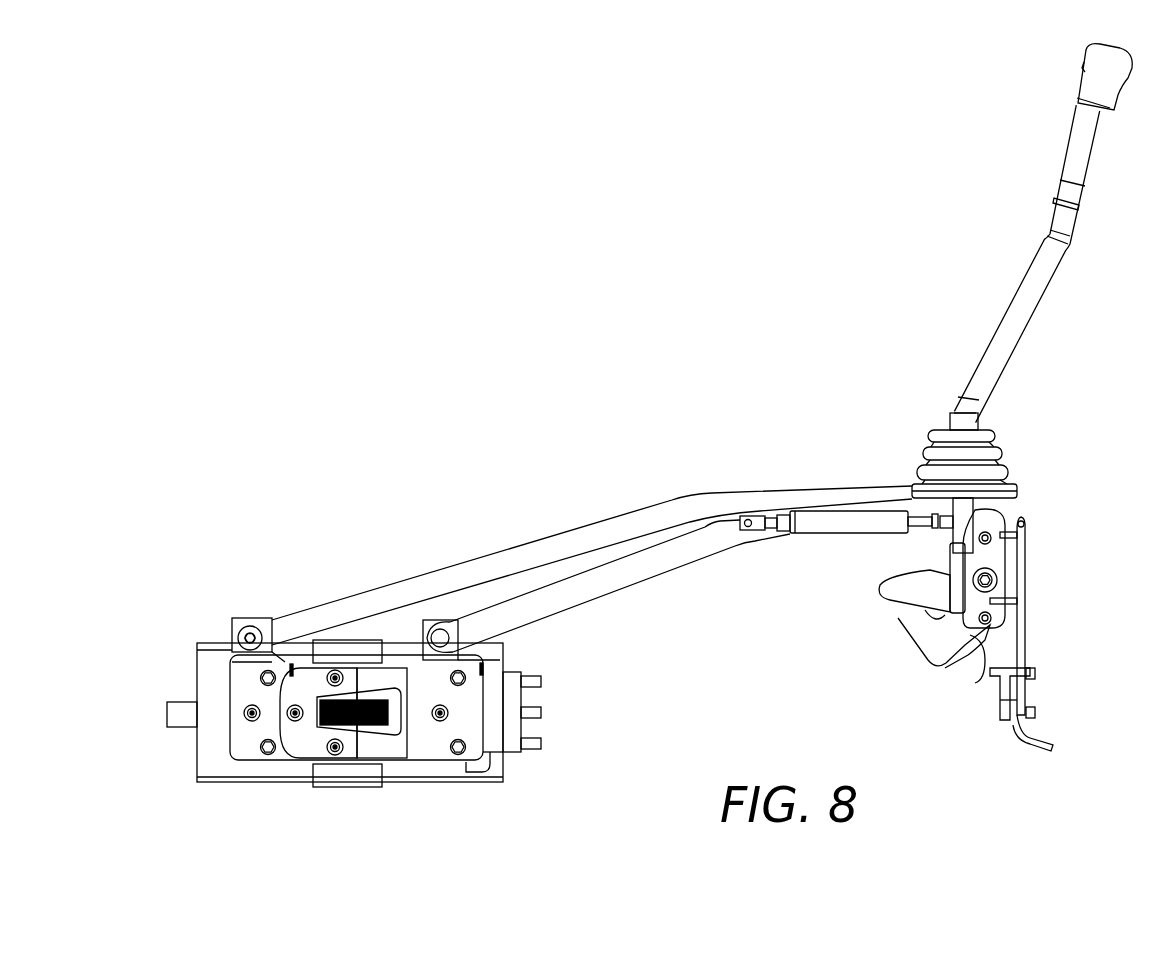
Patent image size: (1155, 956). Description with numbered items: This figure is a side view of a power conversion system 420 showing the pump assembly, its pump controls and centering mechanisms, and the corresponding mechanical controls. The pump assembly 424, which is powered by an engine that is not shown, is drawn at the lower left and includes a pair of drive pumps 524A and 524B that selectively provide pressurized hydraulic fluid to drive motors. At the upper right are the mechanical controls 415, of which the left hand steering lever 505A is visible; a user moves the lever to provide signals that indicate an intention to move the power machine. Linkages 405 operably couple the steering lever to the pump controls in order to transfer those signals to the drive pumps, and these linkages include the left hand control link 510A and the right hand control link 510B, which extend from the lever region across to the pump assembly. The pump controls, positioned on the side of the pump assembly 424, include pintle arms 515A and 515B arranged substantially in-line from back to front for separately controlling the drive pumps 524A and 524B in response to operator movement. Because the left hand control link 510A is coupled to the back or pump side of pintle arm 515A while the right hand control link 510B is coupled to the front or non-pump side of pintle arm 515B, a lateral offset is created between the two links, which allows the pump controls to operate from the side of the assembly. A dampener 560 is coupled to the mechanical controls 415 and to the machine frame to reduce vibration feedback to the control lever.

The linkages 405 is at (777, 442).
The mechanical controls 415 is at (1105, 290).
The power conversion system 420 is at (490, 330).
The pump assembly 424 is at (243, 548).
The left hand steering lever 505A is at (1068, 112).
The left hand control link 510A is at (583, 520).
The right hand control link 510B is at (678, 550).
The pintle arm 515A is at (233, 640).
The pintle arm 515B is at (423, 630).
The drive pump 524A is at (215, 755).
The drive pump 524B is at (455, 767).
The dampener 560 is at (830, 520).